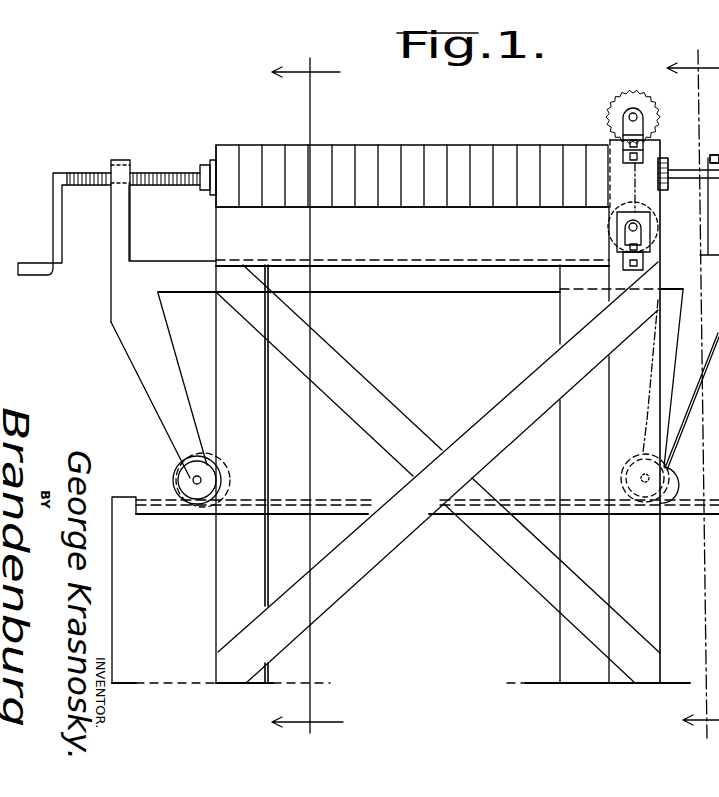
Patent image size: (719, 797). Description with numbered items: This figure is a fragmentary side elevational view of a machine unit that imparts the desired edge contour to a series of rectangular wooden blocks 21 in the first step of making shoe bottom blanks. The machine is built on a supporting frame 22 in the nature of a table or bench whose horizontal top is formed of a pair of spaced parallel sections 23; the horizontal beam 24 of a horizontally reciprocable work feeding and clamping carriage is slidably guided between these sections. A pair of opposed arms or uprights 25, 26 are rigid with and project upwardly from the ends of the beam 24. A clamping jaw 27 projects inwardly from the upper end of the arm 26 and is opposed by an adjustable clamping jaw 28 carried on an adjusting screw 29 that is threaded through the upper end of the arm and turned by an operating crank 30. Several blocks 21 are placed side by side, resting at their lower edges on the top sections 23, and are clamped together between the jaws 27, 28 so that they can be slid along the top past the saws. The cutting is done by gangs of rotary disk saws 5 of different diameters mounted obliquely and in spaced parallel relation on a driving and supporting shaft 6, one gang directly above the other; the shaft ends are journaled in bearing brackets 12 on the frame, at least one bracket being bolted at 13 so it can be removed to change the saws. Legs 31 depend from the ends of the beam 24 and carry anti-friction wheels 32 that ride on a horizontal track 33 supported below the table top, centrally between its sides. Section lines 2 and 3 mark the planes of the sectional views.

The section line 2- 2 is at (693, 396).
The section line 3- 3 is at (307, 403).
The rotary disk cutter or saw 5 is at (605, 110).
The driving and supporting shaft 6 is at (633, 113).
The bearing bracket 12 is at (643, 118).
The bolt 13 is at (713, 146).
The rectangular block 21 is at (507, 157).
The supporting frame 22 is at (568, 310).
The top section 23 is at (437, 250).
The horizontal beam 24 is at (173, 275).
The arm or upright 25 is at (118, 220).
The arm or upright 26 is at (718, 205).
The clamping jaw 27 is at (662, 160).
The adjustable clamping jaw 28 is at (205, 168).
The adjusting screw 29 is at (143, 171).
The operating crank 30 is at (55, 222).
The leg 31 is at (153, 390).
The anti-friction wheel 32 is at (178, 478).
The horizontal track 33 is at (443, 505).